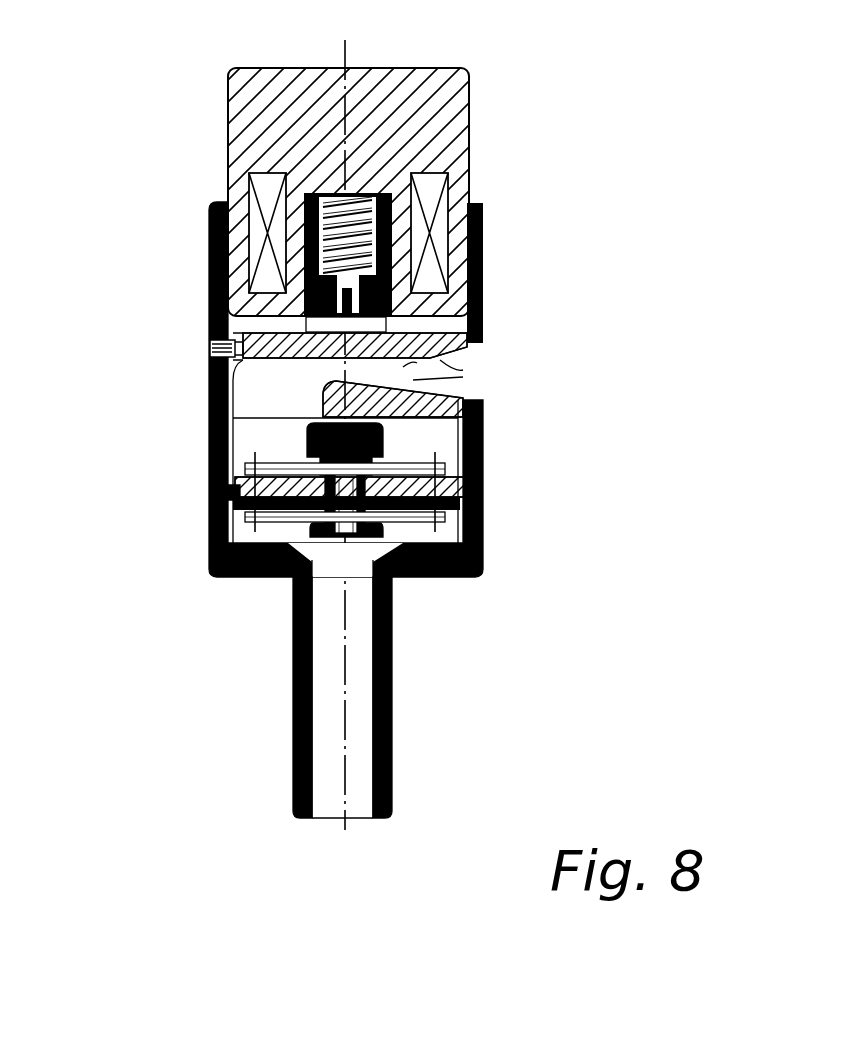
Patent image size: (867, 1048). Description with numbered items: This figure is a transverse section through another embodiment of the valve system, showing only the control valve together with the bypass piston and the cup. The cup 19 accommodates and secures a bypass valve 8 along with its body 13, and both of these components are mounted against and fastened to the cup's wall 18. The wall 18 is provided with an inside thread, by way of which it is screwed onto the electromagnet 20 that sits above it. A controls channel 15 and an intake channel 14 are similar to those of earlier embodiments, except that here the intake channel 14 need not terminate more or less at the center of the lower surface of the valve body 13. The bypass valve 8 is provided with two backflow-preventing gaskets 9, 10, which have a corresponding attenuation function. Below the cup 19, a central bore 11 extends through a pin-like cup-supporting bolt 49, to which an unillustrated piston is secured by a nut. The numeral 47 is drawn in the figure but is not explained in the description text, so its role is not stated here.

The electromagnet 20 is at (431, 125).
The valve body 13 is at (430, 333).
The controls channel 15 is at (395, 375).
The sealing surface 47 is at (460, 375).
The wall 18 is at (483, 440).
The bypass valve 8 is at (483, 495).
The cup 19 is at (483, 562).
The cup-supporting bolt 49 is at (393, 673).
The central bore 11 is at (392, 730).
The intake channel 14 is at (265, 384).
The backflow-preventing gasket 9 is at (210, 455).
The backflow-preventing gasket 10 is at (215, 545).